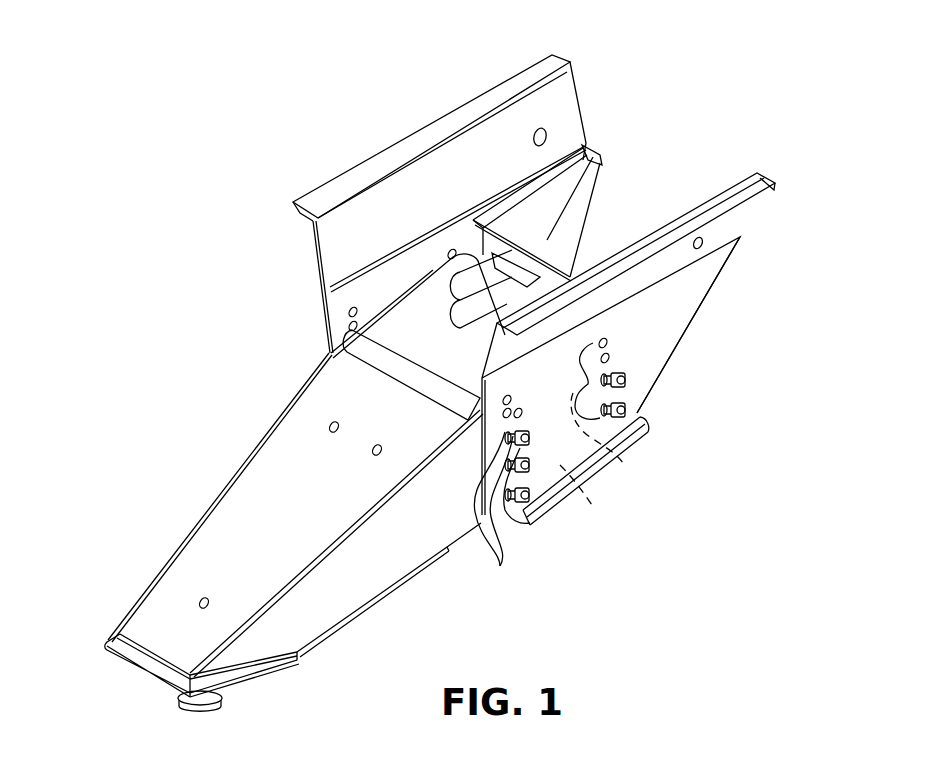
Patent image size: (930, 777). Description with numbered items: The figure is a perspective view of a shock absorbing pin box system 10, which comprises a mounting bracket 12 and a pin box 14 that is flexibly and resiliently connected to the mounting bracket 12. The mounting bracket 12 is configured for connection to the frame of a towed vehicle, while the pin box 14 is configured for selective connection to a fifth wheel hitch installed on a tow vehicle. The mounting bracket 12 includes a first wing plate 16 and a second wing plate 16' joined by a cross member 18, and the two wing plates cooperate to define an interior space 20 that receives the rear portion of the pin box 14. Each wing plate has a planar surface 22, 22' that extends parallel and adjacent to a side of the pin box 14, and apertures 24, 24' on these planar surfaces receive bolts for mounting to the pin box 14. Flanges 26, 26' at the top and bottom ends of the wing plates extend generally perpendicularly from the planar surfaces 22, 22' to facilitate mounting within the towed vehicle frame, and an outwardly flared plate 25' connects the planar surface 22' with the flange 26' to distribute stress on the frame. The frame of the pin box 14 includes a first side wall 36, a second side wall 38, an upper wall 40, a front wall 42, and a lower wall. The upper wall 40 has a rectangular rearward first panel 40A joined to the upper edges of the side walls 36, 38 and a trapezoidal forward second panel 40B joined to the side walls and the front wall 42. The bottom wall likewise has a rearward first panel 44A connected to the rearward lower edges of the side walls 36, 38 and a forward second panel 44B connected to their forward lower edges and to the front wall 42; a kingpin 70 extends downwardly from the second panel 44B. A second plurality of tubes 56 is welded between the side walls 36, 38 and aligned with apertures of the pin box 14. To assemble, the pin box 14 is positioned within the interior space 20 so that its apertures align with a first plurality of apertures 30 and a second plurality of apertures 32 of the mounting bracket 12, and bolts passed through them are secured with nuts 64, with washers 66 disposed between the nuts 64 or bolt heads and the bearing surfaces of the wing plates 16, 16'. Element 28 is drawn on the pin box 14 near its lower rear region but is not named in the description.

The shock absorbing pin box system 10 is at (765, 58).
The mounting bracket 12 is at (391, 88).
The pin box 14 is at (126, 568).
The first wing plate 16 is at (716, 325).
The second wing plate 16' is at (284, 287).
The cross member 18 is at (598, 252).
The interior space 20 is at (682, 158).
The planar surface 22 is at (659, 350).
The planar surface 22' is at (293, 321).
The aperture 24 is at (754, 265).
The aperture 24' is at (584, 99).
The outwardly flared plate 25' is at (458, 177).
The flange 26 is at (666, 254).
The flange 26' is at (431, 118).
The lower bar 28 is at (652, 438).
The first plurality of apertures of the mounting bracket 30 is at (592, 507).
The second plurality of apertures of the mounting bracket 32 is at (607, 445).
The first side wall 36 is at (279, 627).
The second side wall 38 is at (176, 545).
The upper wall 40 is at (238, 548).
The first panel 40A is at (386, 370).
The second panel 40B is at (292, 488).
The front wall 42 is at (150, 662).
The first panel 44A is at (380, 598).
The second panel 44B is at (255, 678).
The second plurality of tubes 56 is at (478, 292).
The nut 64 is at (507, 437).
The washer 66 is at (612, 372).
The kingpin 70 is at (200, 712).